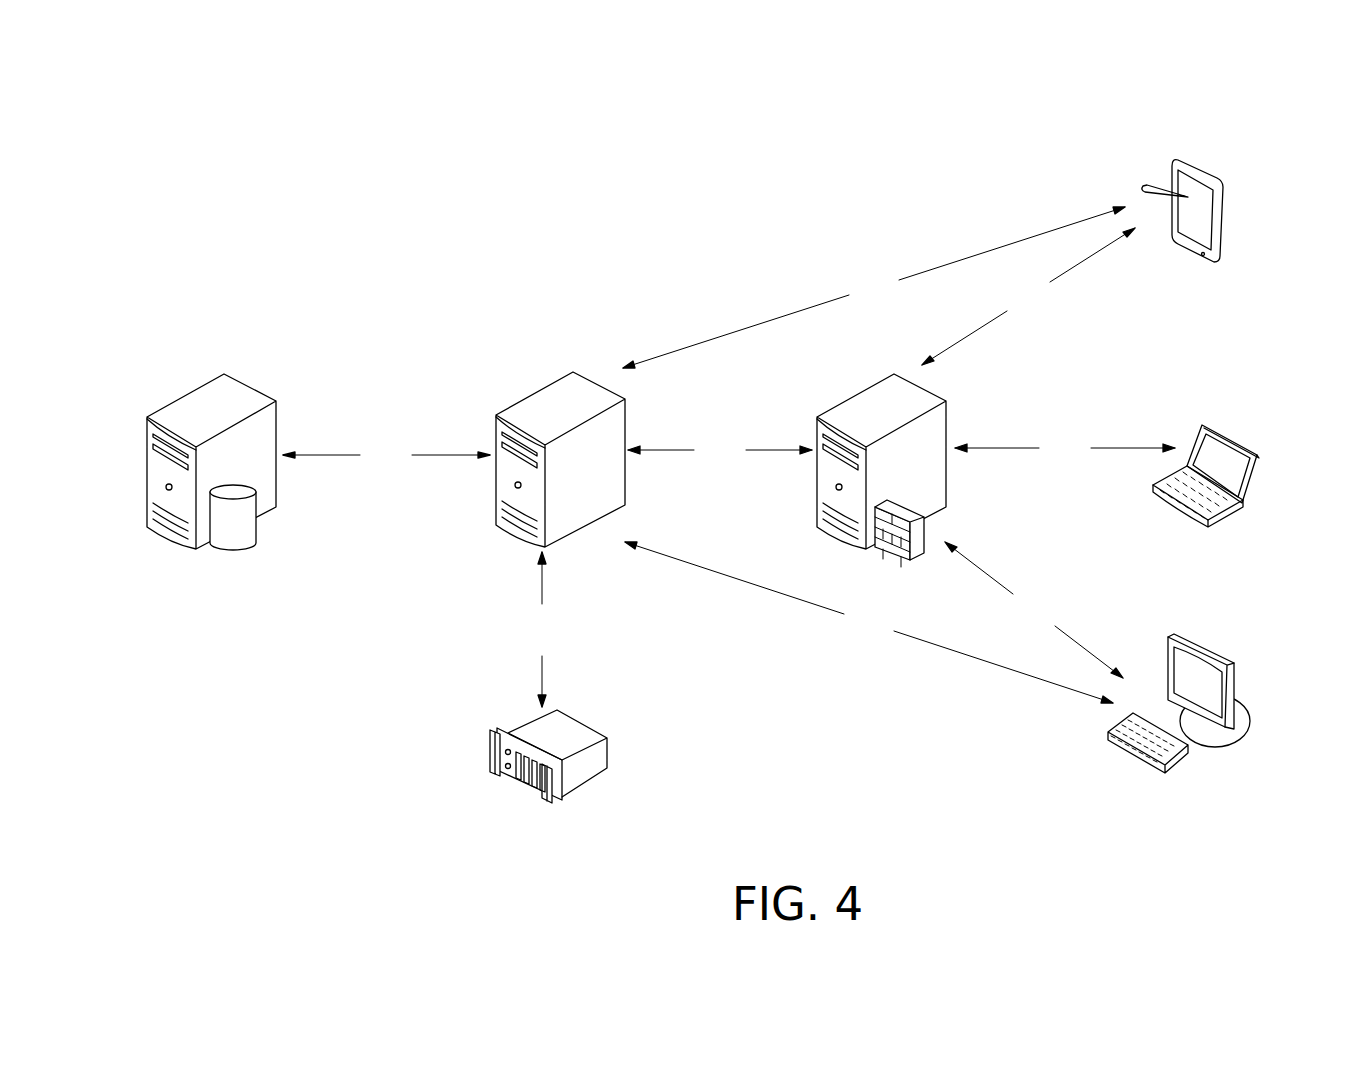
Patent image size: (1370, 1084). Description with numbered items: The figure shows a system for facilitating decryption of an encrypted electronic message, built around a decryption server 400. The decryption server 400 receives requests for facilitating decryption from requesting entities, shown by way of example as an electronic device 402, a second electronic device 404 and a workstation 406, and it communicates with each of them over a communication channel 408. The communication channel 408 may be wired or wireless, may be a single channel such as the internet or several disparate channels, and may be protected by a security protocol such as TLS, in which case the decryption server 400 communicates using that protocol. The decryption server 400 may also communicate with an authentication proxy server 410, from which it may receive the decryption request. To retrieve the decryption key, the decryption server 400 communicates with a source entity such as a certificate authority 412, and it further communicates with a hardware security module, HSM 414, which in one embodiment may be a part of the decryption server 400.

The decryption server 400 is at (502, 337).
The electronic device 402 is at (1282, 130).
The electronic device 404 is at (1280, 381).
The workstation 406 is at (1278, 602).
The communication channel 408 is at (729, 457).
The authentication proxy server 410 is at (1003, 382).
The certificate authority 412 is at (176, 335).
The Hardware Security Module (HSM) 414 is at (645, 692).